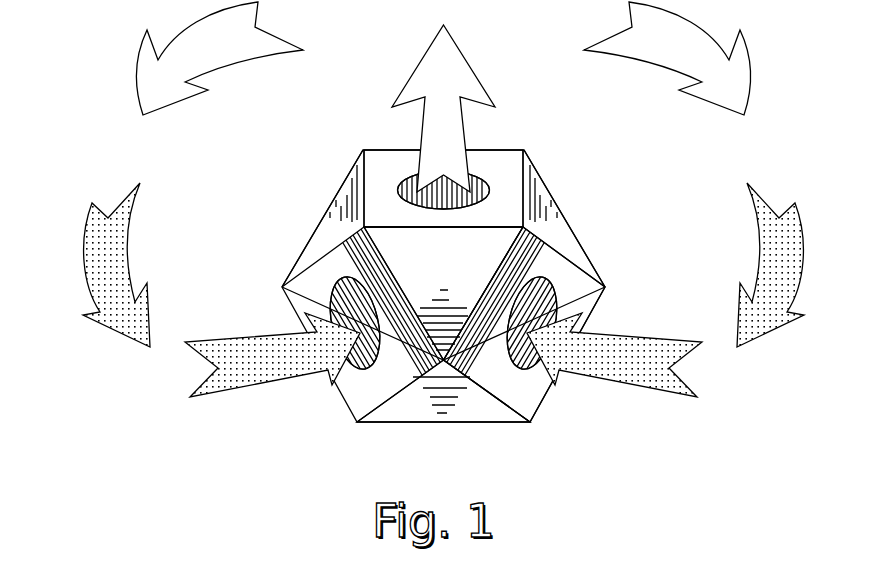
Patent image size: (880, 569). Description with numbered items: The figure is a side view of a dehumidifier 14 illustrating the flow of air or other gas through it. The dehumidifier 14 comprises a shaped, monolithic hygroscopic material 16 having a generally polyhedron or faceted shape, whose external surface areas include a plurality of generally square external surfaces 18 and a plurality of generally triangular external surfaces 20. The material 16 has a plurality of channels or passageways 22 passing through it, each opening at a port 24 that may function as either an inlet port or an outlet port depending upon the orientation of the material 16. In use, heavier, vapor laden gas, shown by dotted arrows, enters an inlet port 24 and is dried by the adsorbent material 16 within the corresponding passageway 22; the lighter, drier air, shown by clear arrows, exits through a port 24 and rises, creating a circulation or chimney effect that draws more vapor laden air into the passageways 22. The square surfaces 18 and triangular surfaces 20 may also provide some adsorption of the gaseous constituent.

The dehumidifier 14 is at (585, 163).
The monolithic hygroscopic material 16 is at (577, 236).
The square external surfaces 18 is at (492, 211).
The triangular external surfaces 20 is at (332, 220).
The passageways 22 is at (432, 206).
The port 24 is at (480, 177).